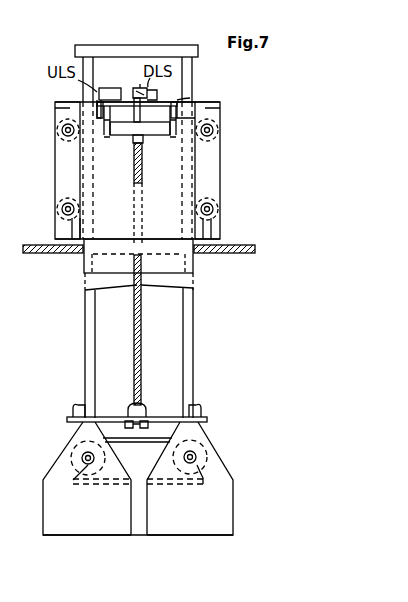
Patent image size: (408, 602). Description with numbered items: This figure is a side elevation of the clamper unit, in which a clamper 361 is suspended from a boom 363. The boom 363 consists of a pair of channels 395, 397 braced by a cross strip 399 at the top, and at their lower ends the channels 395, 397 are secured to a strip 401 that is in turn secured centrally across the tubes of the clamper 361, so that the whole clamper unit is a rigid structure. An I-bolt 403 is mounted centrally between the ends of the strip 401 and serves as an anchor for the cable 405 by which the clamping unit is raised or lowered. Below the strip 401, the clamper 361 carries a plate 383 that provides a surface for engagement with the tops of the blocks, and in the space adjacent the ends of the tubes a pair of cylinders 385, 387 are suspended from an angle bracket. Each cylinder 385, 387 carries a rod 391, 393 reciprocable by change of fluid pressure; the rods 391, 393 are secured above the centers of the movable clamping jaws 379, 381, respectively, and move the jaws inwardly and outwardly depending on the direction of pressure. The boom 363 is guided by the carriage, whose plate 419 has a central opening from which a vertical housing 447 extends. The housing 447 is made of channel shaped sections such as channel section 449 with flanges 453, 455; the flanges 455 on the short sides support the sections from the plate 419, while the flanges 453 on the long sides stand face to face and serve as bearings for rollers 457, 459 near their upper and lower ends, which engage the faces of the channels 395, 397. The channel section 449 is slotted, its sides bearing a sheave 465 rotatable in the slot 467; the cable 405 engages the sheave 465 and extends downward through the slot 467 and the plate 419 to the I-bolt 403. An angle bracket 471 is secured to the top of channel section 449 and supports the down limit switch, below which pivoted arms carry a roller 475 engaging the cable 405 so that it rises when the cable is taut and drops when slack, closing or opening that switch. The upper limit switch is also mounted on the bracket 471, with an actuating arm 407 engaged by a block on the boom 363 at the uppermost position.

The cross strip 399 is at (162, 47).
The actuating arm 407 is at (99, 87).
The angle bracket 471 is at (177, 97).
The vertical housing 447 is at (208, 101).
The rollers 457 is at (56, 128).
The flanges 453 is at (58, 185).
The rollers 459 is at (59, 212).
The roller 475 is at (130, 136).
The slot 467 is at (142, 150).
The sheave 465 is at (142, 164).
The channel section 449 is at (132, 205).
The flanges 455 is at (218, 238).
The plate 419 is at (249, 252).
The channel 395 is at (84, 300).
The channel 397 is at (188, 297).
The cable 405 is at (142, 306).
The boom 363 is at (139, 317).
The I-bolt 403 is at (143, 408).
The strip 401 is at (198, 415).
The cylinder 385 is at (71, 450).
The cylinder 387 is at (214, 444).
The plate 383 is at (135, 473).
The rod 391 is at (74, 483).
The rod 393 is at (201, 483).
The clamper 361 is at (156, 478).
The movable clamping jaw 379 is at (92, 532).
The movable clamping jaw 381 is at (203, 535).